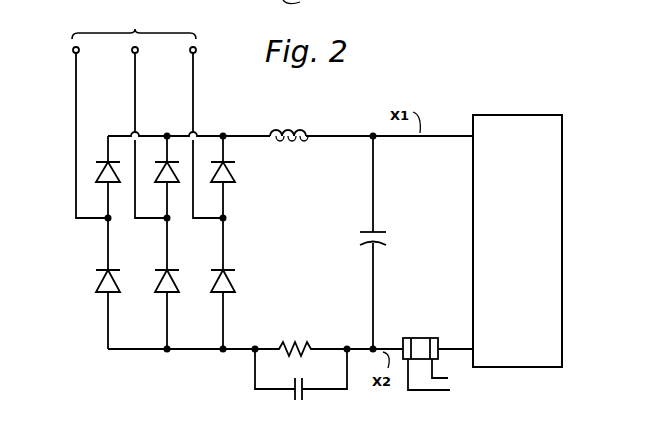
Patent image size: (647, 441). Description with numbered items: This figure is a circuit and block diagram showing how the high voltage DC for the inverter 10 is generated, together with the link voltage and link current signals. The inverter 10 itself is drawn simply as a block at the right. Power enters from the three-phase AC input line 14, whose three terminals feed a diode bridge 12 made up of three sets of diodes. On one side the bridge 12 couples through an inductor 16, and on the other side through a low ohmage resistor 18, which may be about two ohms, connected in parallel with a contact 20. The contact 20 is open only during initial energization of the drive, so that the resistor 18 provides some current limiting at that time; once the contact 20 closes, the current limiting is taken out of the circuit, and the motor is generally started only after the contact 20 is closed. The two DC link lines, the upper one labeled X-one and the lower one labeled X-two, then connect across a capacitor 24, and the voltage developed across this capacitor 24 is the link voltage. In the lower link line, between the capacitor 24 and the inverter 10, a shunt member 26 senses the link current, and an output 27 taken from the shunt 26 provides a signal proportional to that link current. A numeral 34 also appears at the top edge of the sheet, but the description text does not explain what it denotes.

The inverter 10 is at (531, 115).
The diode bridge 12 is at (140, 297).
The AC input line 14 is at (93, 30).
The inductor 16 is at (282, 130).
The low ohmage resistor 18 is at (309, 346).
The contact 20 is at (304, 393).
The capacitor 24 is at (376, 231).
The shunt member 26 is at (415, 338).
The output 27 is at (448, 380).
The element 34 (partial) 34 is at (306, 6).